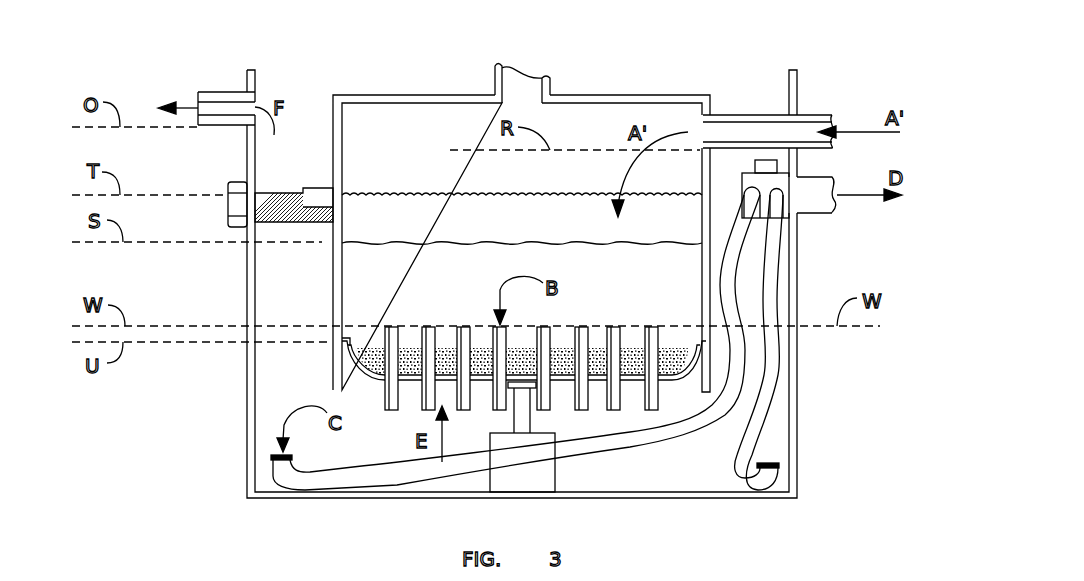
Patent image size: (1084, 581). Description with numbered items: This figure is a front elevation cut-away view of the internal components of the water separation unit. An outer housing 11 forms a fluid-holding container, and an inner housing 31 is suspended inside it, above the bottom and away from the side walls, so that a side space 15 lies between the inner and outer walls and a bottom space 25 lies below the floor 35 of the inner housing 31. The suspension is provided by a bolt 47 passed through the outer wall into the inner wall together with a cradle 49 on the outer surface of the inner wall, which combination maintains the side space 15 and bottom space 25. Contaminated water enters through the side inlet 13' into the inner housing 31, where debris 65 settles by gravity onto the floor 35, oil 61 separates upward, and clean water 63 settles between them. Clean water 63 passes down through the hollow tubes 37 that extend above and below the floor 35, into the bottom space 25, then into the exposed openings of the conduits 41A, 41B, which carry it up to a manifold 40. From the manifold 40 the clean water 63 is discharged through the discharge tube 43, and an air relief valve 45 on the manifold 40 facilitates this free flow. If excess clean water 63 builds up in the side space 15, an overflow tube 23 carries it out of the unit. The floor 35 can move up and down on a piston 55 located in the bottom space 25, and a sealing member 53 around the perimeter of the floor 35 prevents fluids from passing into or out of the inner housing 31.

The outer housing 11 is at (247, 367).
The side inlet 13' is at (788, 89).
The side space 15 is at (304, 300).
The overflow tube 23 is at (220, 92).
The bottom space 25 is at (663, 480).
The inner housing 31 is at (332, 128).
The floor 35 is at (667, 378).
The hollow tubes 37 is at (400, 338).
The manifold 40 is at (778, 185).
The conduit 41A is at (768, 463).
The conduit 41B is at (276, 455).
The discharge tube 43 is at (810, 205).
The air relief valve 45 is at (768, 160).
The bolt 47 is at (233, 180).
The cradle 49 is at (318, 188).
The sealing member 53 is at (345, 341).
The piston 55 is at (528, 475).
The oil 61 is at (504, 226).
The clean water 63 is at (481, 275).
The debris 65 is at (553, 350).